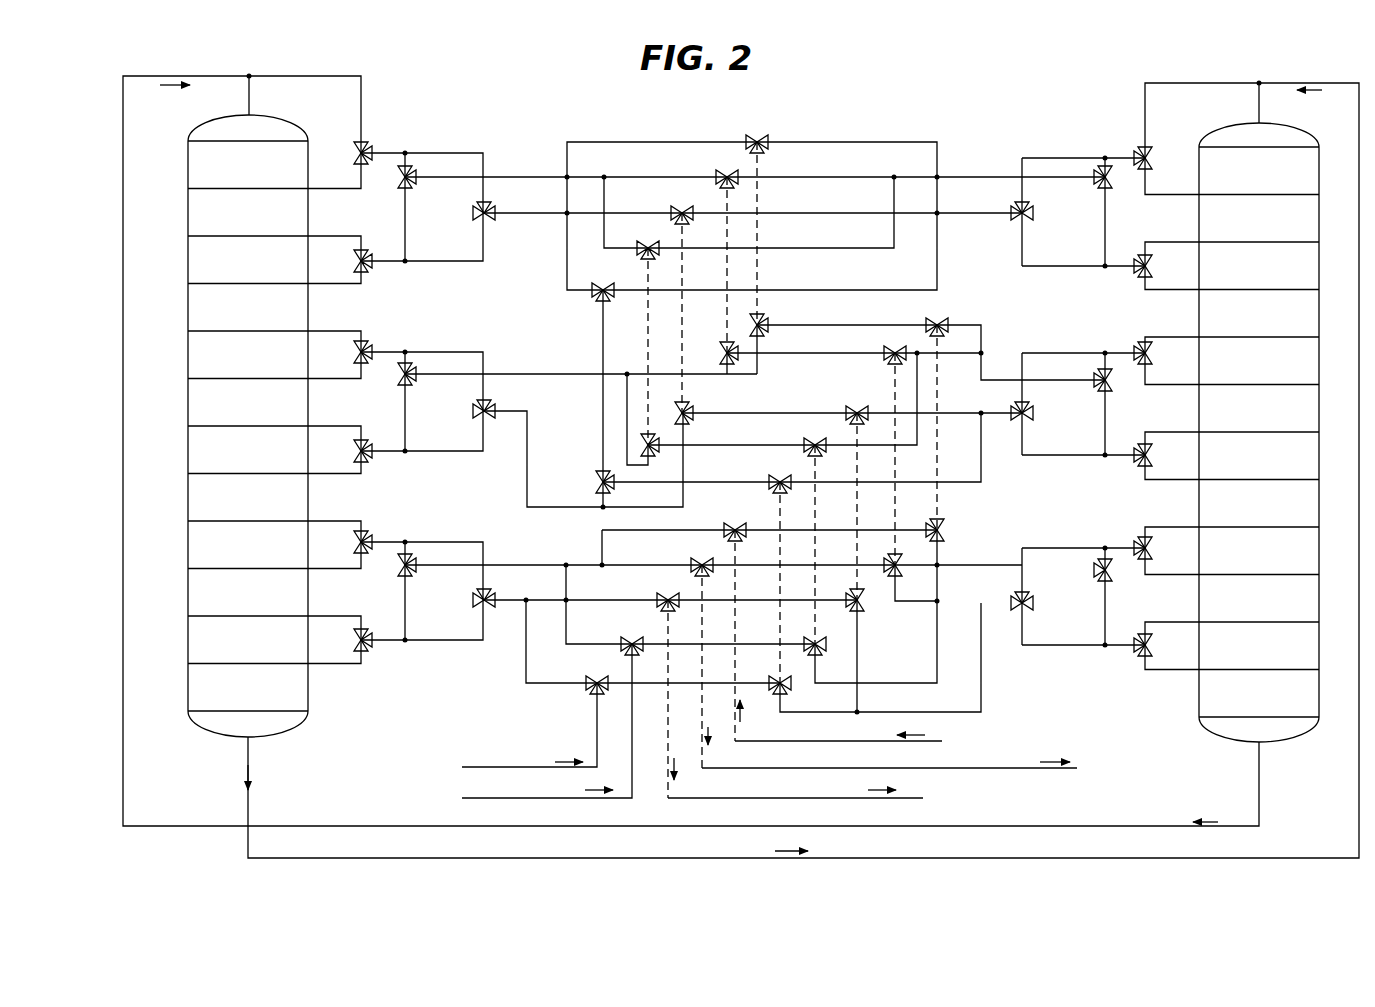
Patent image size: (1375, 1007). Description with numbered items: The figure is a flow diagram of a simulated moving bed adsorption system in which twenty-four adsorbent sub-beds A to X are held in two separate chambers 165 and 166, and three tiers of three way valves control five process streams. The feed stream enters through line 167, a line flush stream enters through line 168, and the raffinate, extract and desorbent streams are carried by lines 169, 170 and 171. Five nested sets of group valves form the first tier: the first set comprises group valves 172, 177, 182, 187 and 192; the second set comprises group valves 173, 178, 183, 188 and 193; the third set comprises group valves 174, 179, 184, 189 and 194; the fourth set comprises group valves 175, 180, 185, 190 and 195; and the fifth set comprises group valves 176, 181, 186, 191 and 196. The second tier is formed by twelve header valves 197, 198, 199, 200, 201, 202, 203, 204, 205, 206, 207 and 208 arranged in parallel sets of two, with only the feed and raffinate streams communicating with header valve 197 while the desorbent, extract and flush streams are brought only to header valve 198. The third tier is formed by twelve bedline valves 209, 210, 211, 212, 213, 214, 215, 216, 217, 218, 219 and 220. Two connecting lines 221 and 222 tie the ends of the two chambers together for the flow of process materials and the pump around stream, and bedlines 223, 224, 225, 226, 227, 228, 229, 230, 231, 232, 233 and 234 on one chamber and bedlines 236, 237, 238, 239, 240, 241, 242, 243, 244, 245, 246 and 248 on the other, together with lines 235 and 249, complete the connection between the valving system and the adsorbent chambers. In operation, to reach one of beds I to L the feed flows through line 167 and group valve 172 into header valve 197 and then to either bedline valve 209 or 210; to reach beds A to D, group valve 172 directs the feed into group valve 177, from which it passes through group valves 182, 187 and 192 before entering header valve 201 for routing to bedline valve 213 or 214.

The adsorbent chamber 165 is at (186, 170).
The adsorbent chamber 166 is at (1345, 112).
The feed line 167 is at (462, 767).
The line flush line 168 is at (474, 798).
The raffinate line 169 is at (920, 798).
The extract line 170 is at (1046, 768).
The desorbent line 171 is at (890, 741).
The group valve 172 is at (590, 676).
The group valve 173 is at (626, 636).
The group valve 174 is at (667, 592).
The group valve 175 is at (704, 557).
The group valve 176 is at (736, 522).
The group valve 177 is at (788, 684).
The group valve 178 is at (822, 645).
The group valve 179 is at (862, 607).
The group valve 180 is at (890, 576).
The group valve 181 is at (948, 532).
The group valve 182 is at (781, 475).
The group valve 183 is at (810, 438).
The group valve 184 is at (852, 405).
The group valve 185 is at (890, 346).
The group valve 186 is at (932, 318).
The group valve 187 is at (592, 480).
The group valve 188 is at (655, 452).
The group valve 189 is at (690, 408).
The group valve 190 is at (718, 353).
The group valve 191 is at (765, 318).
The group valve 192 is at (609, 283).
The group valve 193 is at (653, 240).
The group valve 194 is at (683, 206).
The group valve 195 is at (726, 170).
The group valve 196 is at (760, 135).
The header valve 197 is at (473, 600).
The header valve 198 is at (399, 568).
The header valve 199 is at (473, 411).
The header valve 200 is at (399, 378).
The header valve 201 is at (473, 213).
The header valve 202 is at (399, 184).
The header valve 203 is at (1033, 603).
The header valve 204 is at (1112, 574).
The header valve 205 is at (1033, 413).
The header valve 206 is at (1112, 383).
The header valve 207 is at (1033, 213).
The header valve 208 is at (1112, 180).
The bedline valve 209 is at (370, 650).
The bedline valve 210 is at (370, 532).
The bedline valve 211 is at (370, 461).
The bedline valve 212 is at (370, 342).
The bedline valve 213 is at (370, 270).
The bedline valve 214 is at (369, 142).
The bedline valve 215 is at (1138, 653).
The bedline valve 216 is at (1138, 540).
The bedline valve 217 is at (1138, 462).
The bedline valve 218 is at (1138, 346).
The bedline valve 219 is at (1138, 272).
The bedline valve 220 is at (1152, 155).
The connecting line 221 is at (1348, 83).
The connecting line 222 is at (213, 76).
The bedline 223 is at (353, 663).
The bedline 224 is at (353, 616).
The bedline 225 is at (353, 568).
The bedline 226 is at (353, 521).
The bedline 227 is at (353, 473).
The bedline 228 is at (353, 426).
The bedline 229 is at (353, 378).
The bedline 230 is at (353, 331).
The bedline 231 is at (353, 283).
The bedline 232 is at (353, 236).
The bedline 233 is at (353, 188).
The bedline 234 is at (294, 76).
The line 235 is at (249, 102).
The bedline 236 is at (1198, 669).
The bedline 237 is at (1186, 622).
The bedline 238 is at (1198, 574).
The bedline 239 is at (1188, 527).
The bedline 240 is at (1198, 479).
The bedline 241 is at (1186, 432).
The bedline 242 is at (1198, 384).
The bedline 243 is at (1186, 337).
The bedline 244 is at (1198, 289).
The bedline 245 is at (1186, 242).
The bedline 246 is at (1152, 194).
The bedline 248 is at (1175, 83).
The line 249 is at (1259, 108).